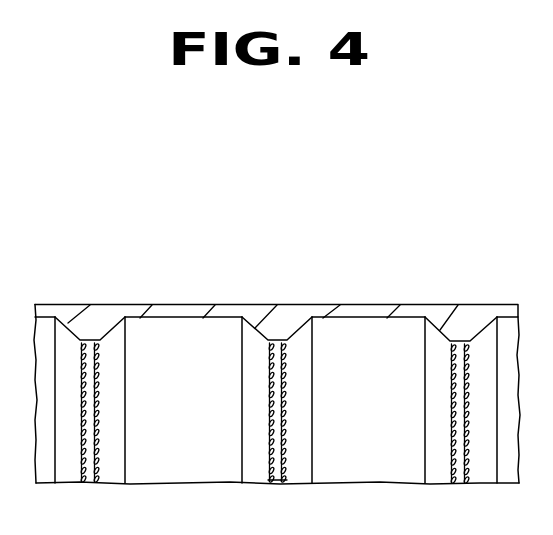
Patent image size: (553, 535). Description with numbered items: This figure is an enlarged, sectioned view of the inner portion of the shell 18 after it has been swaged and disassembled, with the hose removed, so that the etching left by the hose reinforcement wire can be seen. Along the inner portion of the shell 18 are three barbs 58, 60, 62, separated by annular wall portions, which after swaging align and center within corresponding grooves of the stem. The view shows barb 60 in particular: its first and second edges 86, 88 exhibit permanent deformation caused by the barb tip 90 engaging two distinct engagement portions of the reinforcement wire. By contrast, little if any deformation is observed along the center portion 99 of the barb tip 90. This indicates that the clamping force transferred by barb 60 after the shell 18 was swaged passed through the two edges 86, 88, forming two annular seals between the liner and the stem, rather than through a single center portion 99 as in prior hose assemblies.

The shell 18 is at (194, 304).
The barb 58 is at (88, 332).
The barb 60 is at (277, 332).
The barb 62 is at (458, 335).
The first edge 86 is at (268, 343).
The second edge 88 is at (287, 364).
The barb tip 90 is at (277, 422).
The center portion 99 is at (278, 478).